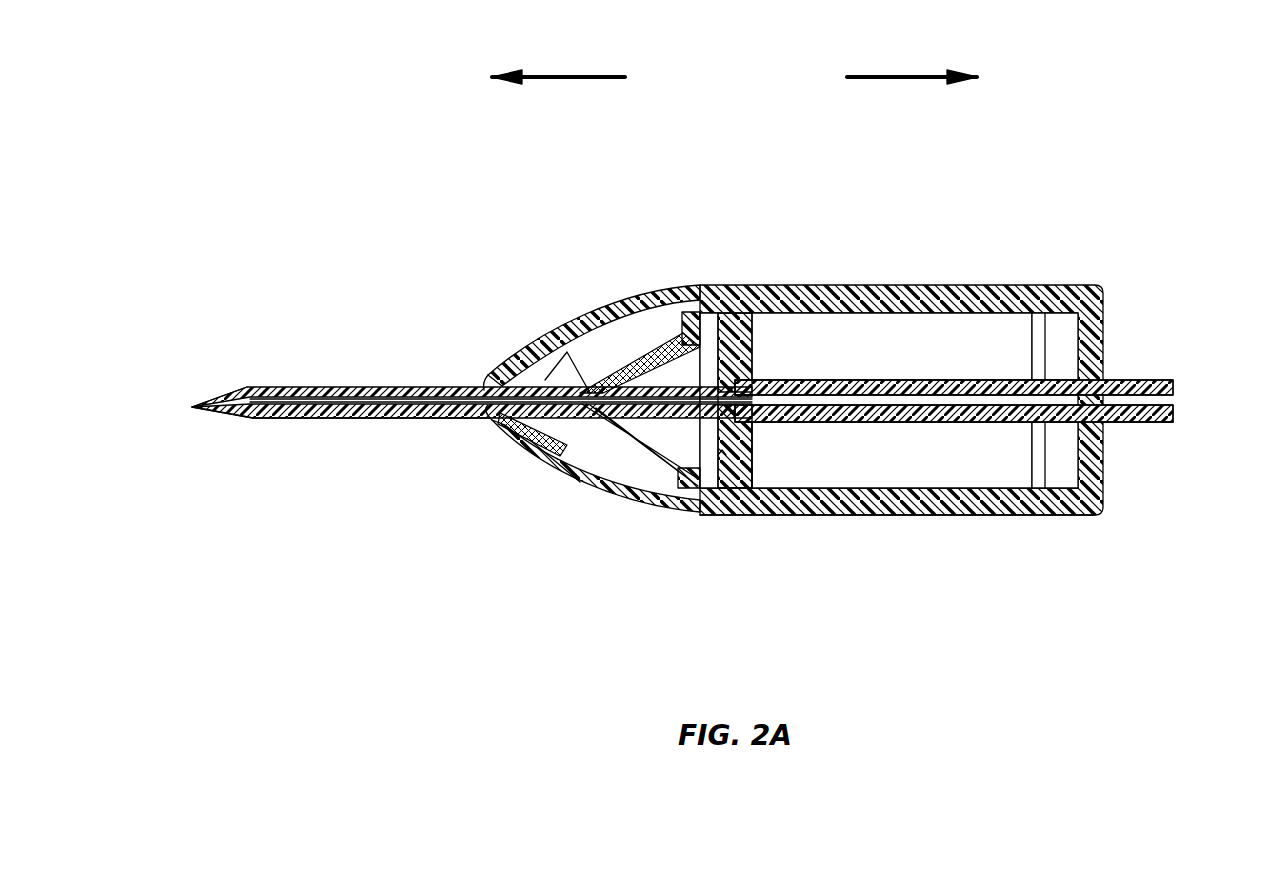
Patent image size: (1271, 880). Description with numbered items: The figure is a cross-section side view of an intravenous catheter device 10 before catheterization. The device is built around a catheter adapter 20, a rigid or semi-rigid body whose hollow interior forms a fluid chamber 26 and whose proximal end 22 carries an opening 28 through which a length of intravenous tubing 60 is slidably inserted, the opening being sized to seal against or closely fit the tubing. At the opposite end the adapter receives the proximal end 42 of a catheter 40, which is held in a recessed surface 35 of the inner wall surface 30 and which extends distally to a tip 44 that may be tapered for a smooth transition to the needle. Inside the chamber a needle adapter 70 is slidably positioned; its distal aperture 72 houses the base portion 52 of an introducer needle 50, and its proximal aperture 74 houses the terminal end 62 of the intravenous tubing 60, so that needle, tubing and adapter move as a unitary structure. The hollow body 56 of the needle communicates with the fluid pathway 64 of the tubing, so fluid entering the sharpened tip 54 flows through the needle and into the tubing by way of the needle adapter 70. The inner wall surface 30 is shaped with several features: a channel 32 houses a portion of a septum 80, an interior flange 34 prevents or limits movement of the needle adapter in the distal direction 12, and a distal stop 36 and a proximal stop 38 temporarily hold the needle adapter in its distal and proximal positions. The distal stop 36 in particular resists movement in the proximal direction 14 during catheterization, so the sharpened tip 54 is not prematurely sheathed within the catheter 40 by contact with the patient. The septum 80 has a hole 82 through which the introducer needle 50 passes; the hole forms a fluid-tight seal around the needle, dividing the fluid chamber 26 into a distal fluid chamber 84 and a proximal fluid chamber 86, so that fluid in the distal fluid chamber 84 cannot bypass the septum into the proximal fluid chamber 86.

The intravenous catheter device 10 is at (1150, 215).
The distal direction 12 is at (571, 76).
The proximal direction 14 is at (907, 76).
The catheter adapter 20 is at (840, 285).
The proximal end 22 is at (1105, 478).
The fluid chamber 26 is at (915, 340).
The opening 28 is at (1108, 382).
The inner wall surface 30 is at (888, 480).
The channel 32 is at (685, 490).
The interior flange 34 is at (718, 455).
The recessed surface 35 is at (540, 362).
The distal stop 36 is at (750, 450).
The proximal stop 38 is at (1050, 480).
The catheter 40 is at (355, 385).
The proximal end 42 is at (530, 442).
The tip 44 is at (252, 422).
The introducer needle 50 is at (570, 432).
The base portion 52 is at (742, 440).
The sharpened tip 54 is at (205, 412).
The hollow body 56 is at (430, 420).
The intravenous tubing 60 is at (1148, 420).
The terminal end 62 is at (755, 440).
The fluid pathway 64 is at (1128, 400).
The needle adapter 70 is at (750, 445).
The distal aperture 72 is at (714, 355).
The proximal aperture 74 is at (757, 320).
The septum 80 is at (640, 355).
The hole 82 is at (583, 380).
The distal fluid chamber 84 is at (628, 455).
The proximal fluid chamber 86 is at (1058, 330).